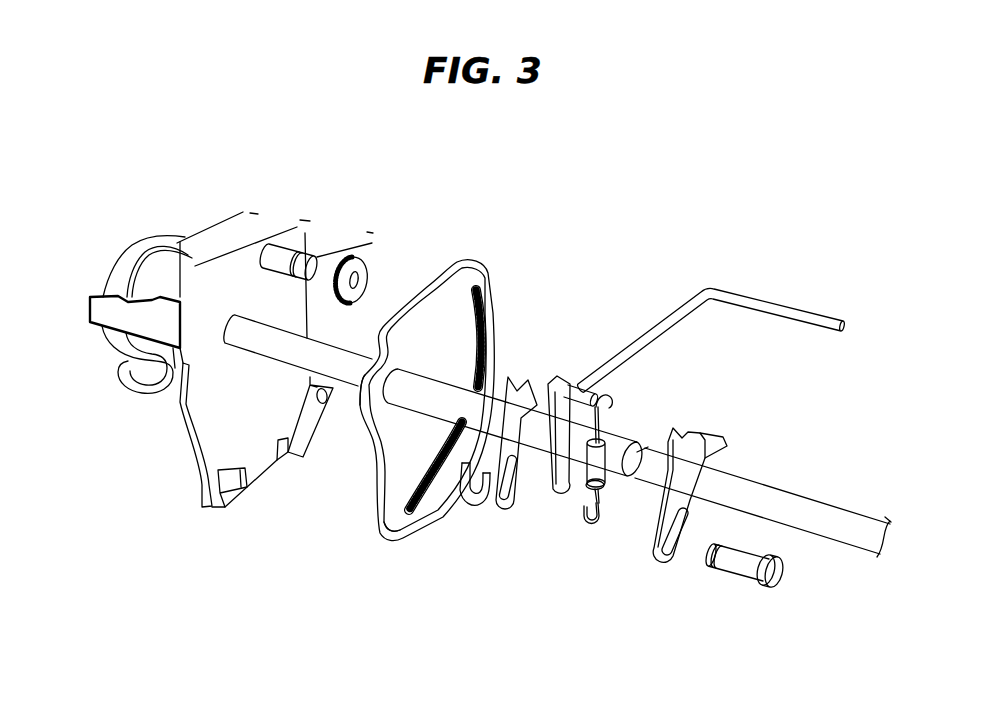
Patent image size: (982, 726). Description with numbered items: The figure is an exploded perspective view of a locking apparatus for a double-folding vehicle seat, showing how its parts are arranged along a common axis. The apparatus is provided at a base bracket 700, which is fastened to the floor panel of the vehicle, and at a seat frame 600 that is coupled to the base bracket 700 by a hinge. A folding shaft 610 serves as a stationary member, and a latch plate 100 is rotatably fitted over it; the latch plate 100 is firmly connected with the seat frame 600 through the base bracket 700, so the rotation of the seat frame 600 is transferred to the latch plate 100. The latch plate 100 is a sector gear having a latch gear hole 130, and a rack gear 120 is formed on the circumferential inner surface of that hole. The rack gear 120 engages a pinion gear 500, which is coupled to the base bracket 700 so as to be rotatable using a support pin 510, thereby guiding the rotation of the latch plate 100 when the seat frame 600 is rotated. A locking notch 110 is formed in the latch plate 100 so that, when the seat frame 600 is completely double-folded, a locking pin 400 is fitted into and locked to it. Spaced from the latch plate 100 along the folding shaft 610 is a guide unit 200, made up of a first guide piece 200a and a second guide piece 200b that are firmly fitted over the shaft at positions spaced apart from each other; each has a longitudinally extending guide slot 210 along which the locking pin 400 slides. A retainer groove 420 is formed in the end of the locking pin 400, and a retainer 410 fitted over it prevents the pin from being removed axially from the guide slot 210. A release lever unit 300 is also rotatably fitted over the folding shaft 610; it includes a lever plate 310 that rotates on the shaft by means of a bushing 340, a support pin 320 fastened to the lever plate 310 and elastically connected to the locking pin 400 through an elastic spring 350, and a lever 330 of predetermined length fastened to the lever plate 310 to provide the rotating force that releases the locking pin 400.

The latch plate 100 is at (382, 381).
The locking notch 110 is at (357, 373).
The rack gear 120 is at (385, 505).
The latch gear hole 130 is at (474, 290).
The guide unit 200 is at (559, 543).
The first guide piece 200a is at (497, 507).
The second guide piece 200b is at (650, 557).
The guide slots 210 is at (655, 544).
The release lever unit 300 is at (613, 345).
The lever plate 310 is at (552, 378).
The support pin 320 is at (577, 377).
The lever 330 is at (690, 310).
The bushing 340 is at (722, 440).
The elastic spring 350 is at (618, 422).
The locking pin 400 is at (709, 614).
The retainer 410 is at (467, 505).
The retainer groove 420 is at (679, 610).
The pinion gear 500 is at (357, 260).
The support pin 510 is at (286, 256).
The seat frame 600 is at (204, 244).
The folding shaft 610 is at (864, 537).
The base bracket 700 is at (210, 424).